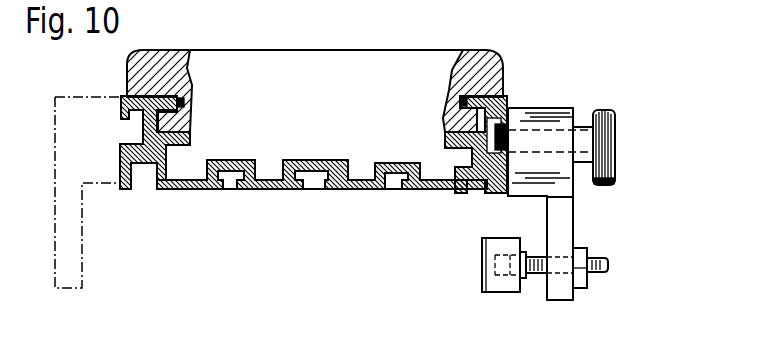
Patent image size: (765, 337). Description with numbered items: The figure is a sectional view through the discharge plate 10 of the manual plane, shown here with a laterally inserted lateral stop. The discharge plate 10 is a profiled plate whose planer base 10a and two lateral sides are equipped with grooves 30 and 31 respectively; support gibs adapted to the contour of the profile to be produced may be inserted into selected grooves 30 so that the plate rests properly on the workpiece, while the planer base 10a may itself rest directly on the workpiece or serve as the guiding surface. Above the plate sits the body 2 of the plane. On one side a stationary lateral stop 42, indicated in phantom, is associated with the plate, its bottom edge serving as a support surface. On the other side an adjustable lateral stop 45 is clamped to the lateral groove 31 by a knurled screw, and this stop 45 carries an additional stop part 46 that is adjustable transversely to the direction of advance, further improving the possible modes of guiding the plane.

The body 2 is at (466, 72).
The lateral groove 31 is at (121, 138).
The discharge plate 10 is at (288, 190).
The groove 30 is at (315, 184).
The planer base 10a is at (433, 194).
The lateral stop 42 is at (73, 270).
The adjustable lateral stop 45 is at (575, 213).
The additional stop part 46 is at (482, 290).